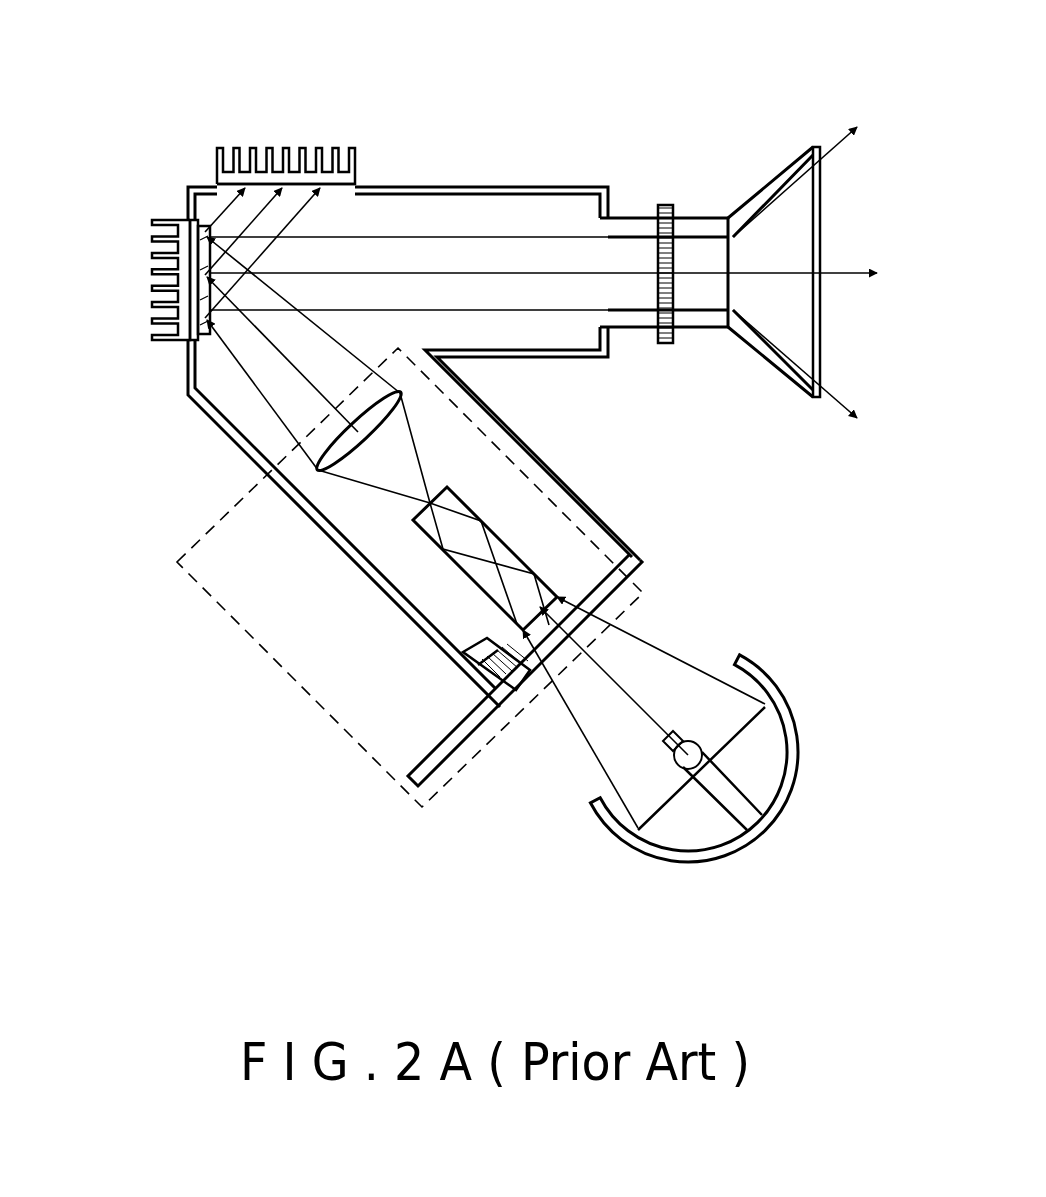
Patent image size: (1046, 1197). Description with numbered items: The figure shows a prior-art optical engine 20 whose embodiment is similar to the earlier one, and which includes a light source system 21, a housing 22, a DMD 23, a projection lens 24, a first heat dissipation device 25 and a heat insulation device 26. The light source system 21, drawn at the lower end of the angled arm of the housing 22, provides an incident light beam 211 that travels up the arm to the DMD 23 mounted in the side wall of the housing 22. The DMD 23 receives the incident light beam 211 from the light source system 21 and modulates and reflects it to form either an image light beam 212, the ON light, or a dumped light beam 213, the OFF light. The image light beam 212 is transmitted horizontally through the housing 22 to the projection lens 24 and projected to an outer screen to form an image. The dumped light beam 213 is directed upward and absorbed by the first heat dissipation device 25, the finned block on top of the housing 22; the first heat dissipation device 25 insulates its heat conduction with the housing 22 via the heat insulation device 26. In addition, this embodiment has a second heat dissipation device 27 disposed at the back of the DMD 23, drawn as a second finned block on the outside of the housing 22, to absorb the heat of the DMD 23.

The optical engine 20 is at (706, 72).
The light source system 21 is at (445, 787).
The housing 22 is at (502, 420).
The DMD 23 is at (194, 324).
The projection lens 24 is at (700, 330).
The first heat dissipation device 25 is at (322, 148).
The heat insulation device 26 is at (362, 187).
The second heat dissipation device 27 is at (185, 252).
The incident light beam 211 is at (258, 393).
The image light beam 212 is at (550, 237).
The dumped light beam 213 is at (200, 228).